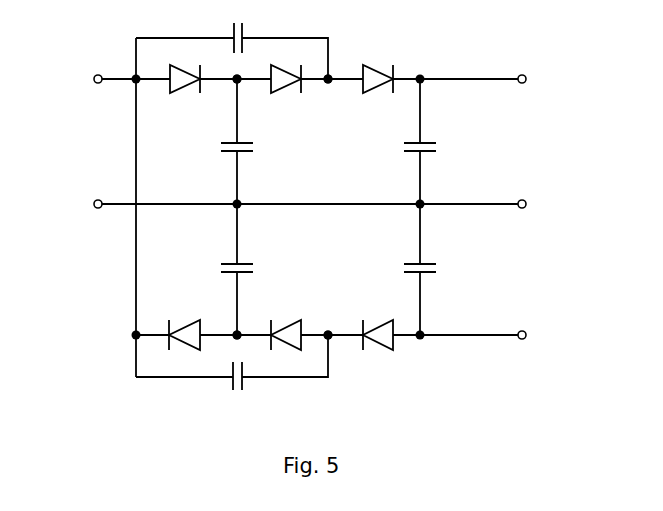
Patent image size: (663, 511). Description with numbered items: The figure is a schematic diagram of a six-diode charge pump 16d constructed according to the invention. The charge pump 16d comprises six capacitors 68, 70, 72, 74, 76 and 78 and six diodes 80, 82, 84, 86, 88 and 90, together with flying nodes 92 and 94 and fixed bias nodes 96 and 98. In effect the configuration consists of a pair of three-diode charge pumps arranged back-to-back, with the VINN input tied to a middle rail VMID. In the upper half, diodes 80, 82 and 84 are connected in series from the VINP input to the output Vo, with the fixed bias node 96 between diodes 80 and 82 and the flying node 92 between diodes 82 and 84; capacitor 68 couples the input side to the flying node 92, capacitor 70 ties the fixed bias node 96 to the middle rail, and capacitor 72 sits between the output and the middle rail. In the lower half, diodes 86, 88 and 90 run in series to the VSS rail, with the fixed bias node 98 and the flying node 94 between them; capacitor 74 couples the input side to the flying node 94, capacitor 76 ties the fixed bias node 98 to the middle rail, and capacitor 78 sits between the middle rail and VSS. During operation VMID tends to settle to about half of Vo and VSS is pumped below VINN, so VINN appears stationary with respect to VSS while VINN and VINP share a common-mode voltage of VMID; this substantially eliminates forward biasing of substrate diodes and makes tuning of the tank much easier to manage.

The 6-diode charge pump 16d is at (246, 424).
The capacitor 68 is at (234, 24).
The capacitor 70 is at (253, 147).
The capacitor 72 is at (404, 147).
The capacitor 74 is at (234, 391).
The capacitor 76 is at (253, 267).
The capacitor 78 is at (404, 267).
The diode 80 is at (190, 90).
The diode 82 is at (282, 90).
The diode 84 is at (381, 90).
The diode 86 is at (189, 323).
The diode 88 is at (285, 323).
The diode 90 is at (378, 323).
The flying node 92 is at (329, 77).
The flying node 94 is at (329, 338).
The fixed bias node 96 is at (237, 81).
The fixed bias node 98 is at (237, 334).